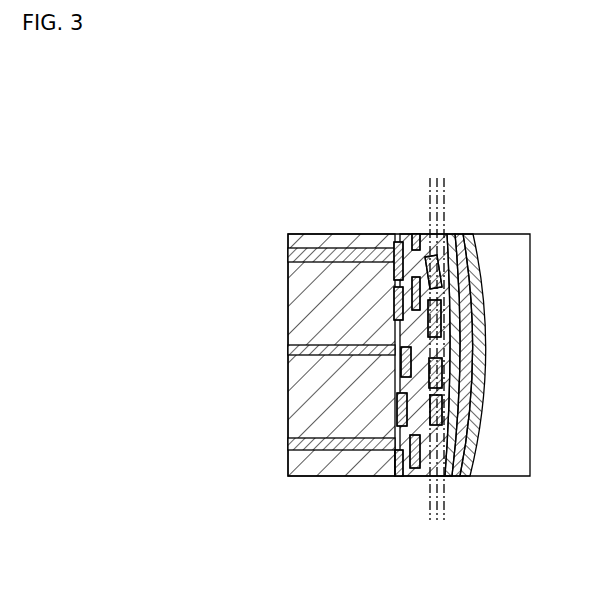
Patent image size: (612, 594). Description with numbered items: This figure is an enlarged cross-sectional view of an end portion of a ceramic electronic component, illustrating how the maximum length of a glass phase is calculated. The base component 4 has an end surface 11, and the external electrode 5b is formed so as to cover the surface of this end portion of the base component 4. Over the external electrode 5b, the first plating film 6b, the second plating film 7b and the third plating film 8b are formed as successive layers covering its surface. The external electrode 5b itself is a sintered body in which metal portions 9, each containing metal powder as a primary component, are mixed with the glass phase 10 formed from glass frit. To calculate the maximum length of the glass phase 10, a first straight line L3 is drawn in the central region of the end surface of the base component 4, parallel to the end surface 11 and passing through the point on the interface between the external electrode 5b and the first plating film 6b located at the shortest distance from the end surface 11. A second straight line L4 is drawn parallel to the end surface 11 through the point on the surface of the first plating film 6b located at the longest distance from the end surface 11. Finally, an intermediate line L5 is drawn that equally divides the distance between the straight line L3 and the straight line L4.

The base component 4 is at (354, 237).
The end surface 11 is at (393, 282).
The second plating film 7b is at (458, 239).
The first plating film 6b is at (452, 262).
The external electrode 5b is at (470, 283).
The third plating film 8b is at (484, 330).
The first straight line L3 is at (427, 198).
The second straight line L4 is at (447, 198).
The intermediate line L5 is at (438, 190).
The metal portions 9 is at (447, 477).
The glass phase 10 is at (397, 478).